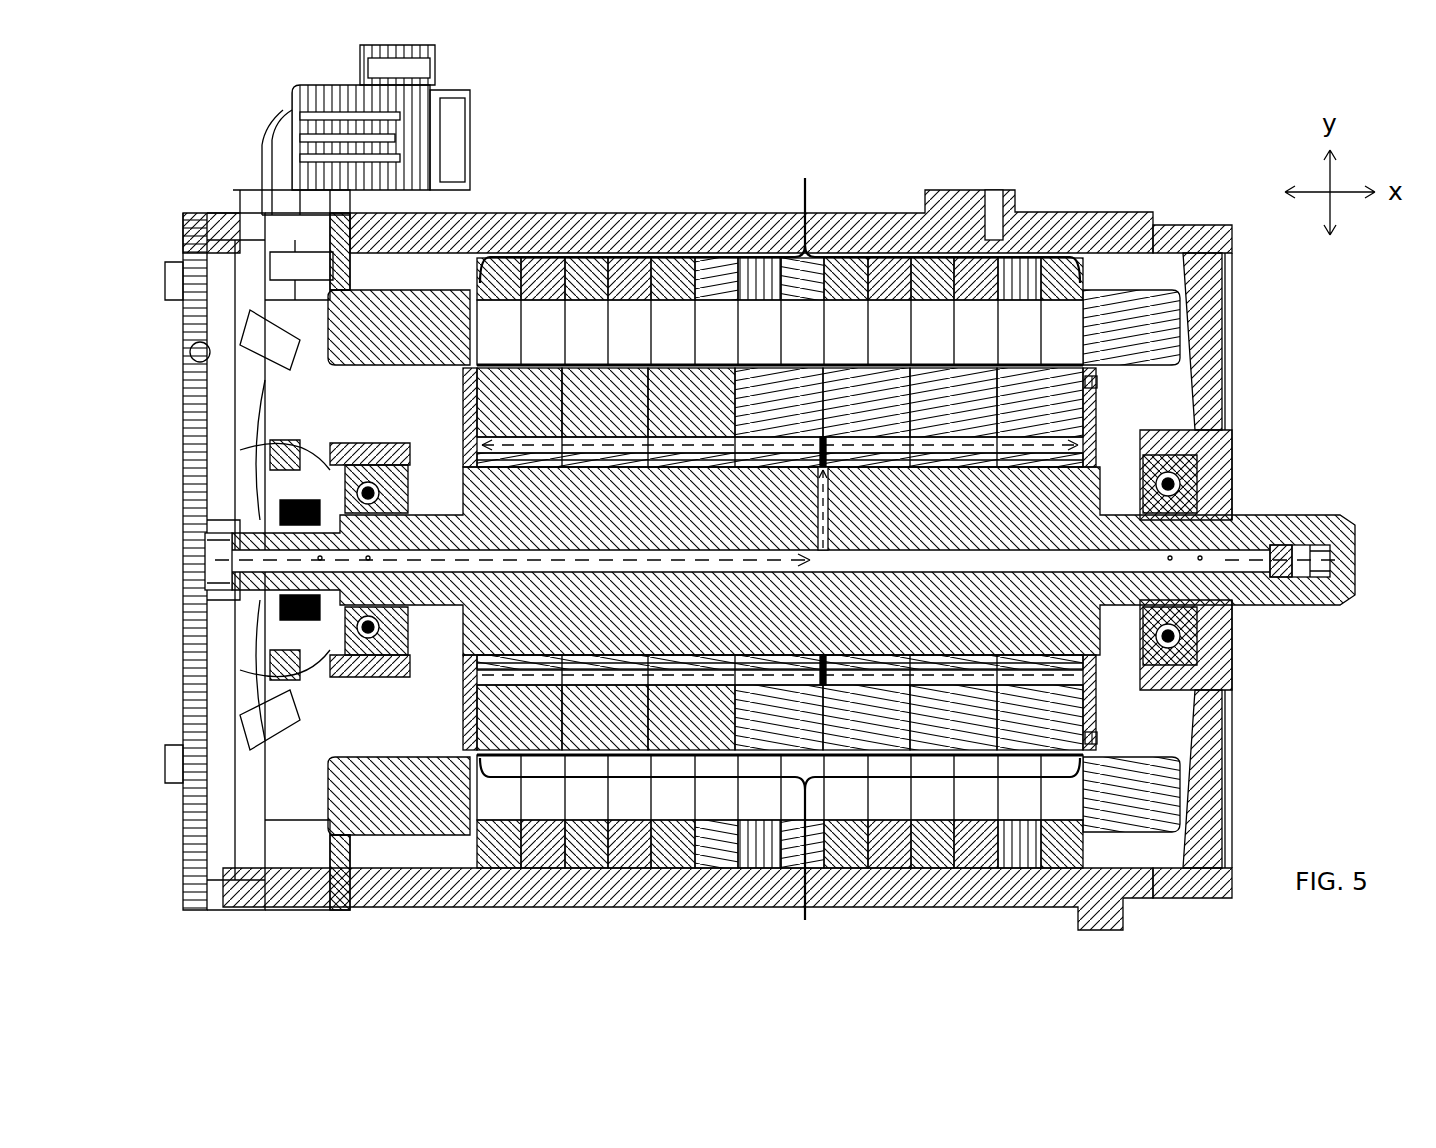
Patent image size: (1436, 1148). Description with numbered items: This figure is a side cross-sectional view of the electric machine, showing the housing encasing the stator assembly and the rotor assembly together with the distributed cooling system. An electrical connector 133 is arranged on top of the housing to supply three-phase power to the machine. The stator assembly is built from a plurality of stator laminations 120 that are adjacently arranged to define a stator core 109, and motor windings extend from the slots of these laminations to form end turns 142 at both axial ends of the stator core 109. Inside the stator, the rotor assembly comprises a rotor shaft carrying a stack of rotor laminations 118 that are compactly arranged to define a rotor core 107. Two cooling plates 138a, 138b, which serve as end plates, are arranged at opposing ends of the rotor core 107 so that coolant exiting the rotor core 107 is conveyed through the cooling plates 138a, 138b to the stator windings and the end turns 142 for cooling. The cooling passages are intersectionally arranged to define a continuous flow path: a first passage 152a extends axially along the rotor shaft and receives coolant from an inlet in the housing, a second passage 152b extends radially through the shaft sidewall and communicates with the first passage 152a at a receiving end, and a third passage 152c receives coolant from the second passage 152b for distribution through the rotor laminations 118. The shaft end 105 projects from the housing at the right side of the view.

The shaft 105 is at (1290, 515).
The rotor core 107 is at (780, 859).
The stator core 109 is at (780, 254).
The rotor laminations 118 is at (688, 710).
The stator laminations 120 is at (630, 258).
The electrical connector 133 is at (320, 82).
The cooling plate 138a is at (461, 415).
The cooling plate 138b is at (1100, 425).
The end turns 142 is at (1155, 310).
The first passage 152a is at (612, 575).
The second passage 152b is at (835, 505).
The third passage 152c is at (600, 368).